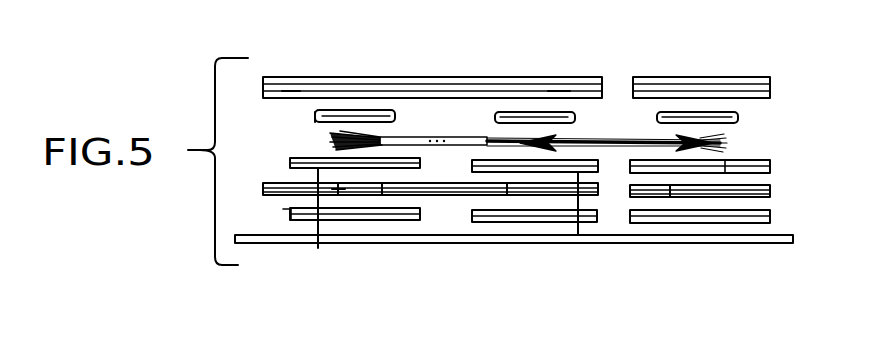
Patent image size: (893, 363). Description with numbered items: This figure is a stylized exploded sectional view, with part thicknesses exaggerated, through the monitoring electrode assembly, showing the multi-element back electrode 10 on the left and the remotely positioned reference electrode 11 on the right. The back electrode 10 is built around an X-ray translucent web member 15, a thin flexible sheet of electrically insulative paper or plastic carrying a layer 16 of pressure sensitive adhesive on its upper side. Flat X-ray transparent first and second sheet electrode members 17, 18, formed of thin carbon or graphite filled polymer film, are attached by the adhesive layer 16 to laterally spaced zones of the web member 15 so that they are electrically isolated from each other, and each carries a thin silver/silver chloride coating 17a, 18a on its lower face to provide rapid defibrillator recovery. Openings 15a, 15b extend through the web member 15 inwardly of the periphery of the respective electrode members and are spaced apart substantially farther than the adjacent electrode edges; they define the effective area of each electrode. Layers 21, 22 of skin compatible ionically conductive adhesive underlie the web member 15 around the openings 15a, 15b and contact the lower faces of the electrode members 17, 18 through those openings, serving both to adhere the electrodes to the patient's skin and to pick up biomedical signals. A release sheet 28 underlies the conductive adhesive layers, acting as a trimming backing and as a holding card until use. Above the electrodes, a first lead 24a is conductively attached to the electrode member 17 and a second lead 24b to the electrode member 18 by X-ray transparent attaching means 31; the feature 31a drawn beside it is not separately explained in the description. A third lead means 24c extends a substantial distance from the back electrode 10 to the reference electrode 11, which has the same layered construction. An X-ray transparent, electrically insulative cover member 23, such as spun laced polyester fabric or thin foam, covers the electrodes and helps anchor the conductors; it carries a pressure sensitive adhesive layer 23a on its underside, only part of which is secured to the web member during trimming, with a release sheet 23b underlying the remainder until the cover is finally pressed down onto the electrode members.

The multi-element back electrode 10 is at (328, 66).
The reference electrode 11 is at (700, 62).
The web member 15 is at (263, 195).
The opening 15a is at (338, 193).
The opening 15b is at (508, 192).
The layer of pressure sensitive adhesive 16 is at (263, 184).
The first sheet electrode member 17 is at (290, 160).
The silver/silver chloride coating 17a is at (317, 222).
The second sheet electrode member 18 is at (476, 160).
The silver/silver chloride coating 18a is at (578, 235).
The conductive adhesive layer 21 is at (288, 210).
The conductive adhesive layer 22 is at (474, 213).
The cover member 23 is at (510, 77).
The layer of pressure sensitive adhesive 23a is at (550, 92).
The release sheet 23b is at (283, 94).
The first lead 24a is at (403, 136).
The second lead 24b is at (478, 136).
The third lead means 24c is at (640, 136).
The release sheet 28 is at (236, 239).
The X-ray transparent attaching means 31 is at (357, 110).
The retaining plate end 31a is at (316, 120).